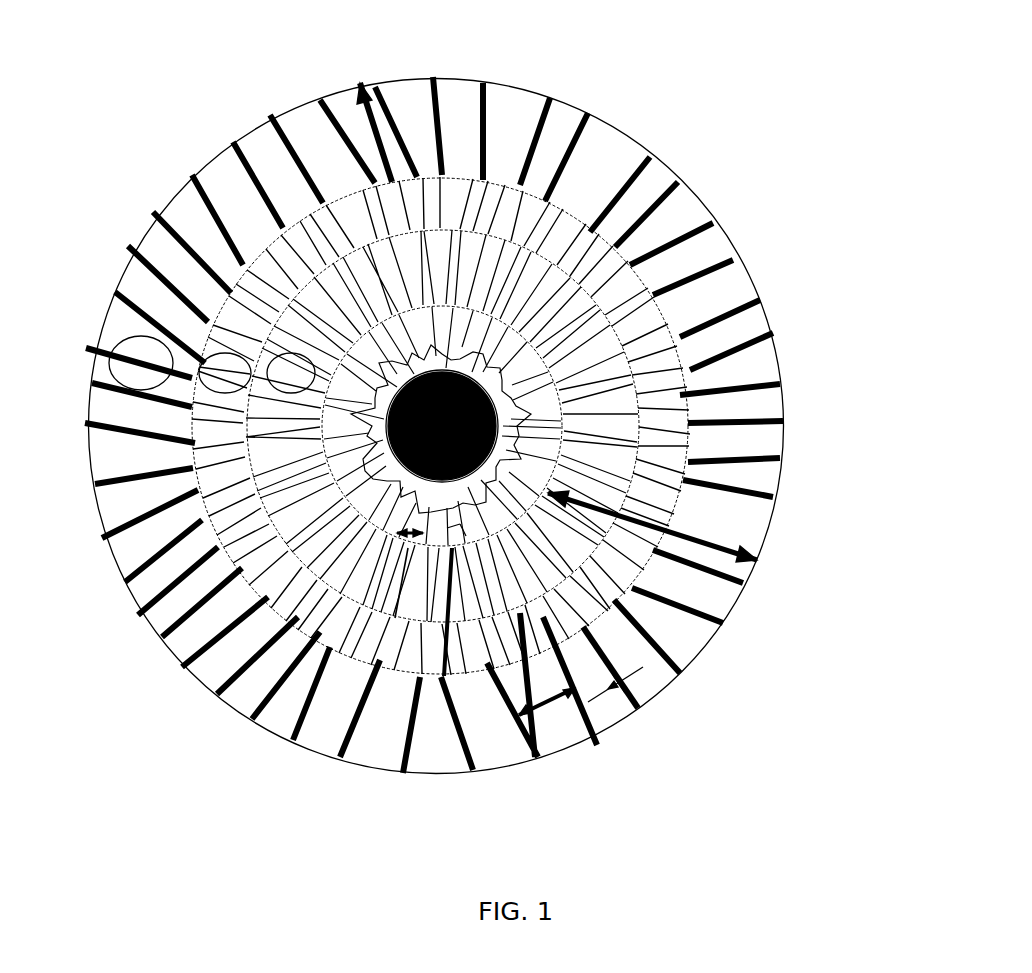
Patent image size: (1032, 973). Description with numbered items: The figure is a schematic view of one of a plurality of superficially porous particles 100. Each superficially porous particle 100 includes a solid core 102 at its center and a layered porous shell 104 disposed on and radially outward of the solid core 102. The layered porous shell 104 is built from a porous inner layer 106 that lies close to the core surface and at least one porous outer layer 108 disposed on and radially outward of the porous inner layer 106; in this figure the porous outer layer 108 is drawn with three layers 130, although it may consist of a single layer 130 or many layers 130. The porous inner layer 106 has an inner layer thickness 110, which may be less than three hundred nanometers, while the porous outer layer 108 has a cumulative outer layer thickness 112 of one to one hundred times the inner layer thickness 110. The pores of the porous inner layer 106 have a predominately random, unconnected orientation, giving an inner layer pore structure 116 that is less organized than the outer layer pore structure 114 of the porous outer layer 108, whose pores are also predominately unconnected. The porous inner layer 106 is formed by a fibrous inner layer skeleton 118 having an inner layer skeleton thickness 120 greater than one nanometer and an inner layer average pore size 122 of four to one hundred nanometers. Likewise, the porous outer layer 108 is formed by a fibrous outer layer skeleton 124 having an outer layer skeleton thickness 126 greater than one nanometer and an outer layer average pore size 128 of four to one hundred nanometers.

The superficially porous particle 100 is at (127, 180).
The solid core 102 is at (395, 355).
The layered porous shell 104 is at (447, 363).
The porous inner layer 106 is at (498, 357).
The porous outer layer 108 is at (650, 333).
The inner layer thickness 110 is at (497, 427).
The cumulative outer layer thickness 112 is at (697, 538).
The outer layer pore structure 114 is at (270, 393).
The inner layer pore structure 116 is at (170, 651).
The fibrous inner layer skeleton 118 is at (537, 470).
The inner layer skeleton thickness 120 is at (455, 530).
The inner layer average pore size 122 is at (408, 540).
The fibrous outer layer skeleton 124 is at (583, 538).
The outer layer skeleton thickness 126 is at (630, 704).
The outer layer average pore size 128 is at (592, 715).
The layer 130 is at (533, 303).